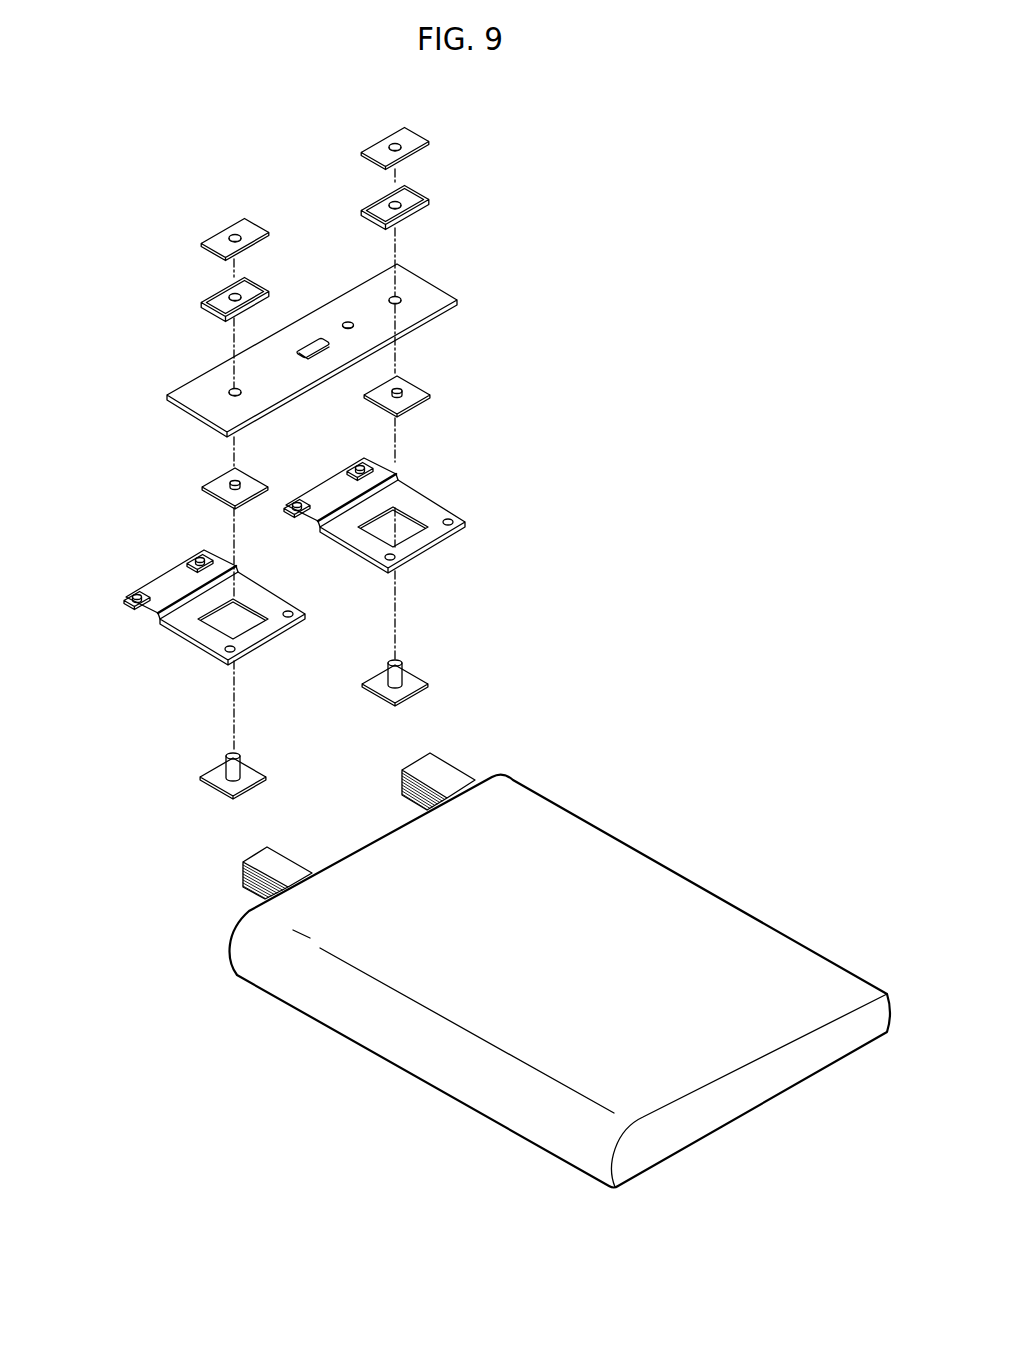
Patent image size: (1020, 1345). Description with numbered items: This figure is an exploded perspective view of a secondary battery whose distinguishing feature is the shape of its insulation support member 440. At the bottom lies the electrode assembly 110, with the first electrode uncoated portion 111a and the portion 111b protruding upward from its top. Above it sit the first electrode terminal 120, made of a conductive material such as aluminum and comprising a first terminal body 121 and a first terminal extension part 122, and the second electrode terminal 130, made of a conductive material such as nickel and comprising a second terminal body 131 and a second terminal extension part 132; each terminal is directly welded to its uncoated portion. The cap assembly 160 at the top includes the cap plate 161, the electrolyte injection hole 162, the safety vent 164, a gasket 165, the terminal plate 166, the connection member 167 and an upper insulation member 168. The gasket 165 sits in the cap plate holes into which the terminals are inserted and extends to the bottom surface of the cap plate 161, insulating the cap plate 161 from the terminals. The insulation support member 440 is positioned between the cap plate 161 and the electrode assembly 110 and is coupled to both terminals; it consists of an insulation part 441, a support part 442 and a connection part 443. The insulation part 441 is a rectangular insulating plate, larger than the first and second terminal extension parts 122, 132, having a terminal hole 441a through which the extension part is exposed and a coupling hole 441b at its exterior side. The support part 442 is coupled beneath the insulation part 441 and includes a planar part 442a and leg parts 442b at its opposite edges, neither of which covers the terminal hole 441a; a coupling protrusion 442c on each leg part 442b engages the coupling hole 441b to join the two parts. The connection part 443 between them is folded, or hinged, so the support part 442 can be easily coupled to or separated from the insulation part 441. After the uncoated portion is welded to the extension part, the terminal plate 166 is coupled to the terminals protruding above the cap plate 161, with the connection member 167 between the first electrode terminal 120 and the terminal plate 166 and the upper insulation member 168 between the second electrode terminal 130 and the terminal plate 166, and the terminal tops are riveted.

The electrode assembly 110 is at (560, 953).
The first electrode uncoated portion 111a is at (284, 865).
The second electrode tab 111b is at (455, 780).
The first electrode terminal 120 is at (174, 766).
The first terminal body 121 is at (223, 758).
The first terminal extension part 122 is at (217, 778).
The second electrode terminal 130 is at (453, 665).
The second terminal body 131 is at (407, 667).
The second terminal extension part 132 is at (410, 683).
The cap assembly 160 is at (355, 331).
The cap plate 161 is at (418, 285).
The electrolyte injection hole 162 is at (352, 326).
The safety vent 164 is at (312, 341).
The gasket 165 is at (210, 483).
The terminal plate 166 is at (410, 138).
The connection member 167 is at (210, 300).
The upper insulation member 168 is at (412, 198).
The insulation support member 440 is at (198, 613).
The insulation part 441 is at (257, 634).
The terminal hole 441a is at (275, 640).
The coupling hole 441b is at (291, 634).
The support part 442 is at (139, 610).
The planar part 442a is at (169, 609).
The leg parts 442b is at (135, 596).
The coupling protrusion 442c is at (122, 575).
The connection part 443 is at (182, 570).